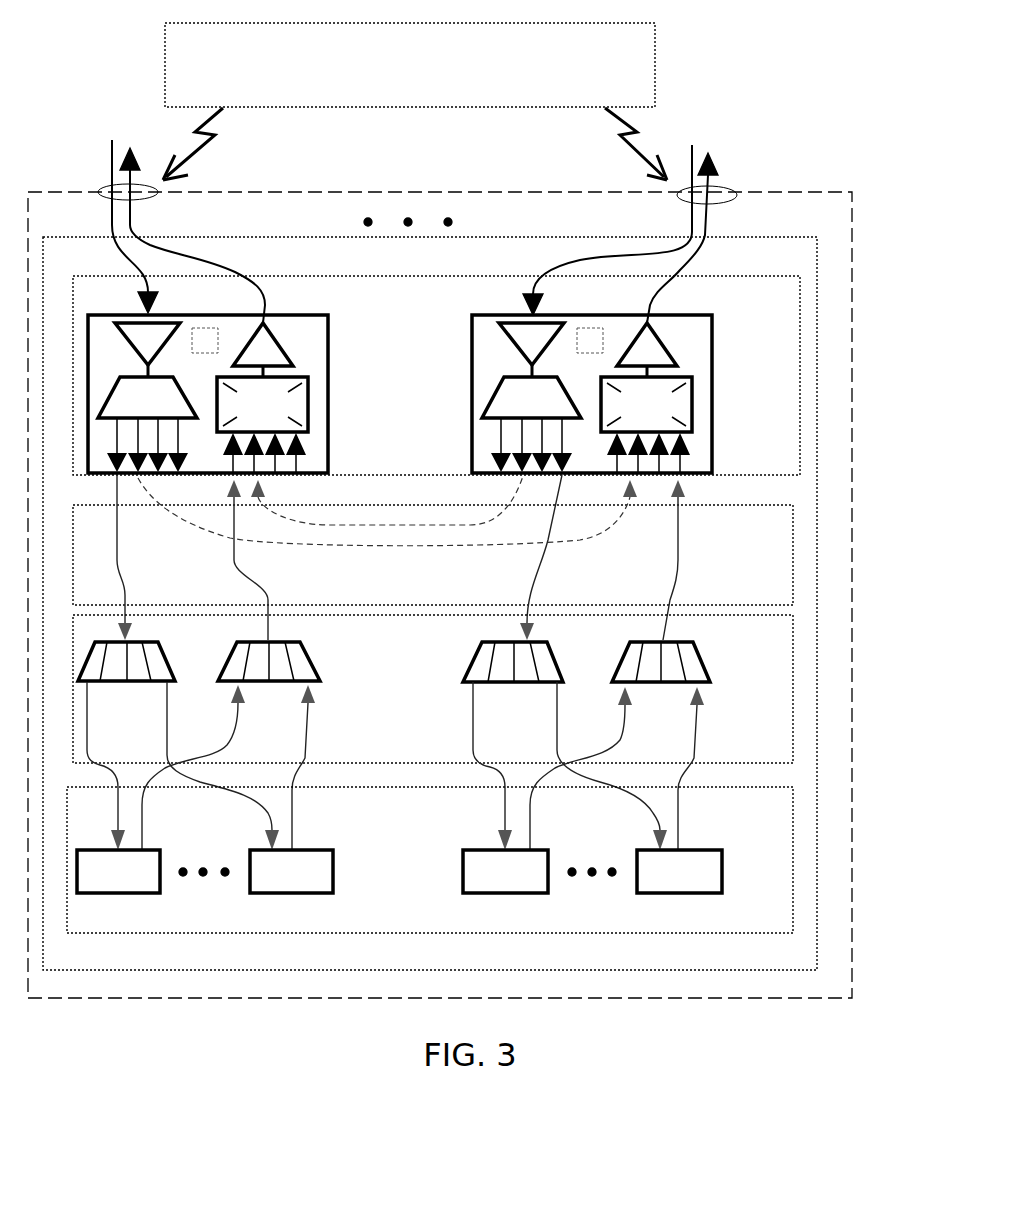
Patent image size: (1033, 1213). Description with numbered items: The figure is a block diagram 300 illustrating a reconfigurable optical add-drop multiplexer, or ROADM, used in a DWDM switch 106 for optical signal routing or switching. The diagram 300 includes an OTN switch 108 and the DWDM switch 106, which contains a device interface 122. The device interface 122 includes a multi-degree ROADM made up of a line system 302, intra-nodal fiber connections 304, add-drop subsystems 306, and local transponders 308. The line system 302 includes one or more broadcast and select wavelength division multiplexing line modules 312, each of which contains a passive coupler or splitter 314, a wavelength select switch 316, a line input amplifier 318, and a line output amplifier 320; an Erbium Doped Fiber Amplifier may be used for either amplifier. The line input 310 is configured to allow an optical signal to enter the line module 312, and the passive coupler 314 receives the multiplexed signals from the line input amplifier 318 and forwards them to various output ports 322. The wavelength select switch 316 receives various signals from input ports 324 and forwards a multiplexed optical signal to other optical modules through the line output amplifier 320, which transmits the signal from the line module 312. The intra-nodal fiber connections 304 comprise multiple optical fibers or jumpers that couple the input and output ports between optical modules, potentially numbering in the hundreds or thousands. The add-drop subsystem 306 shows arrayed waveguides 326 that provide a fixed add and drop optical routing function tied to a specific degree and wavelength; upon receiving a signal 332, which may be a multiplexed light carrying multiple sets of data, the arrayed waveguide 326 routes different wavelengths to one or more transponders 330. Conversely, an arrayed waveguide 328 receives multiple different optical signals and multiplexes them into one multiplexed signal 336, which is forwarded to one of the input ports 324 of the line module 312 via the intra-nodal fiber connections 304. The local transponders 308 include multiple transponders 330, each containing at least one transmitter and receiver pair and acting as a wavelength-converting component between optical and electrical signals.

The block diagram 300 is at (795, 44).
The DWDM switch 106 is at (742, 190).
The OTN switch 108 is at (415, 101).
The device interface 122 is at (430, 592).
The line system 302 is at (436, 307).
The intra-nodal fiber connections 304 is at (433, 540).
The add-drop subsystem 306 is at (433, 689).
The local transponders 308 is at (430, 860).
The ingress fiber port 310 is at (200, 328).
The B&S WDM line module 312 is at (300, 314).
The passive coupler 314 is at (339, 397).
The wavelength select switch 316 is at (310, 405).
The line input amplifier 318 is at (120, 335).
The line output amplifier 320 is at (277, 356).
The output ports 322 is at (113, 446).
The input ports 324 is at (305, 468).
The arrayed waveguide 326 is at (167, 660).
The arrayed waveguide 328 is at (313, 660).
The transponder 330 is at (127, 897).
The signal 332 is at (117, 560).
The multiplexed signal 336 is at (247, 586).